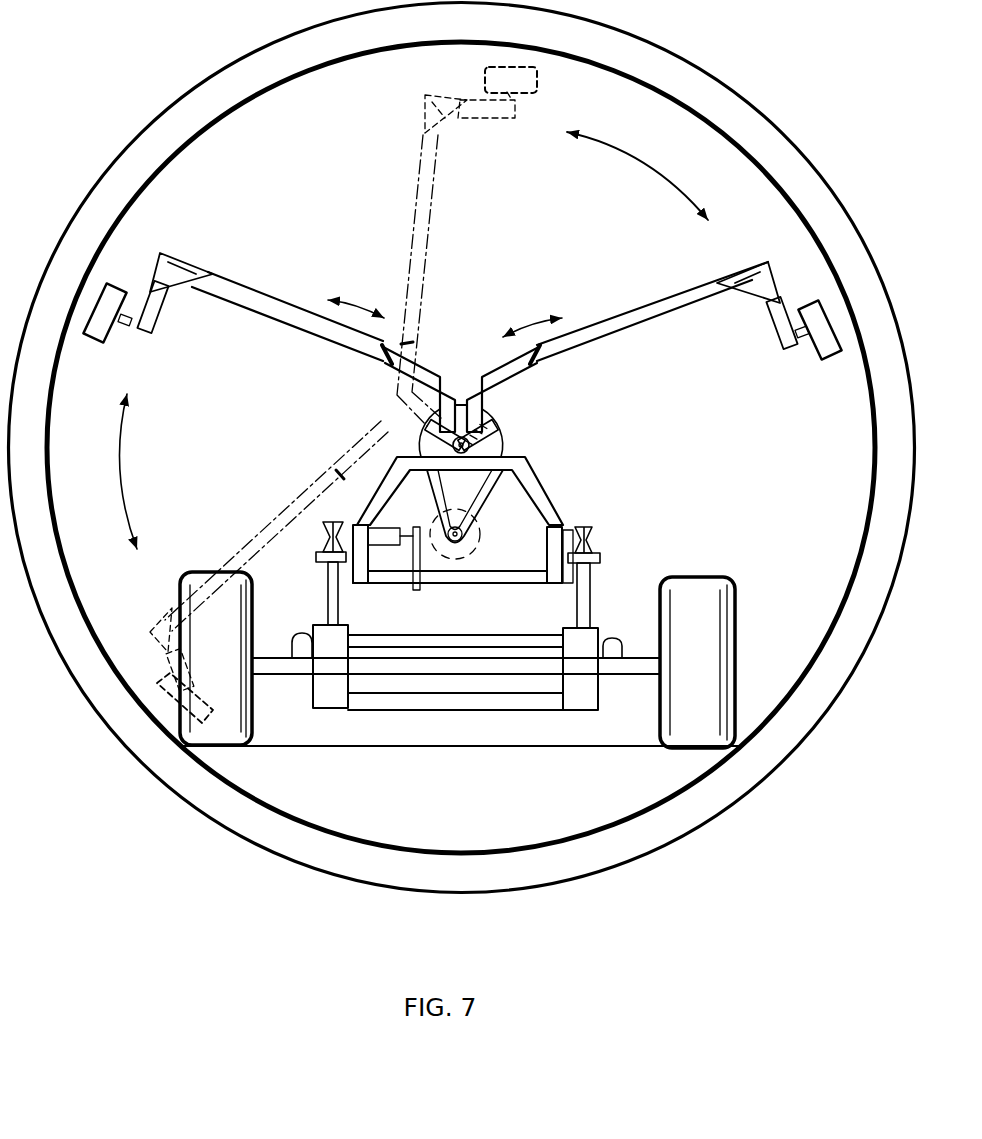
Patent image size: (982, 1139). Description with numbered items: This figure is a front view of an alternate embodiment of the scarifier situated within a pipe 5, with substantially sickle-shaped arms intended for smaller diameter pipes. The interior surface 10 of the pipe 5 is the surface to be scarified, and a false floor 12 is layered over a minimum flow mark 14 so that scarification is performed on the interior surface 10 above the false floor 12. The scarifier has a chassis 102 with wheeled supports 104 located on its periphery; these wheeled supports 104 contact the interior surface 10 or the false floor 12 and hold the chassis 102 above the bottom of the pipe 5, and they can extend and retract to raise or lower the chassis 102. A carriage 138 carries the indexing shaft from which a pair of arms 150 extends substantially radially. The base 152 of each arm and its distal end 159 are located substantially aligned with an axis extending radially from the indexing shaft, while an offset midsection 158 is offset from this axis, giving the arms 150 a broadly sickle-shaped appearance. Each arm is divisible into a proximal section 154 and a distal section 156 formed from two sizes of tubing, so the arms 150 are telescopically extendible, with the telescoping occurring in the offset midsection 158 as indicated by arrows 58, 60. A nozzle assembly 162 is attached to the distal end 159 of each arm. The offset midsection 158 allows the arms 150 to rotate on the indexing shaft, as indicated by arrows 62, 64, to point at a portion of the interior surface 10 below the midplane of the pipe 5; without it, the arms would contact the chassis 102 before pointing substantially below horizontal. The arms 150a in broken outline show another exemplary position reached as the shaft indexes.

The pipe 5 is at (240, 58).
The interior surface 10 is at (297, 77).
The false floor 12 is at (352, 750).
The minimum flow mark 14 is at (186, 748).
The arrow 58 is at (530, 325).
The arrow 60 is at (360, 303).
The arrow 62 is at (650, 168).
The arrow 64 is at (120, 463).
The chassis 102 is at (602, 594).
The wheeled supports 104 is at (752, 580).
The carriage 138 is at (556, 480).
The arms 150 is at (263, 264).
The arms in broken outline 150a is at (435, 177).
The base 152 is at (430, 431).
The proximal section 154 is at (442, 368).
The distal section 156 is at (150, 318).
The offset midsection 158 is at (280, 325).
The distal end 159 is at (121, 331).
The nozzle assembly 162 is at (99, 343).